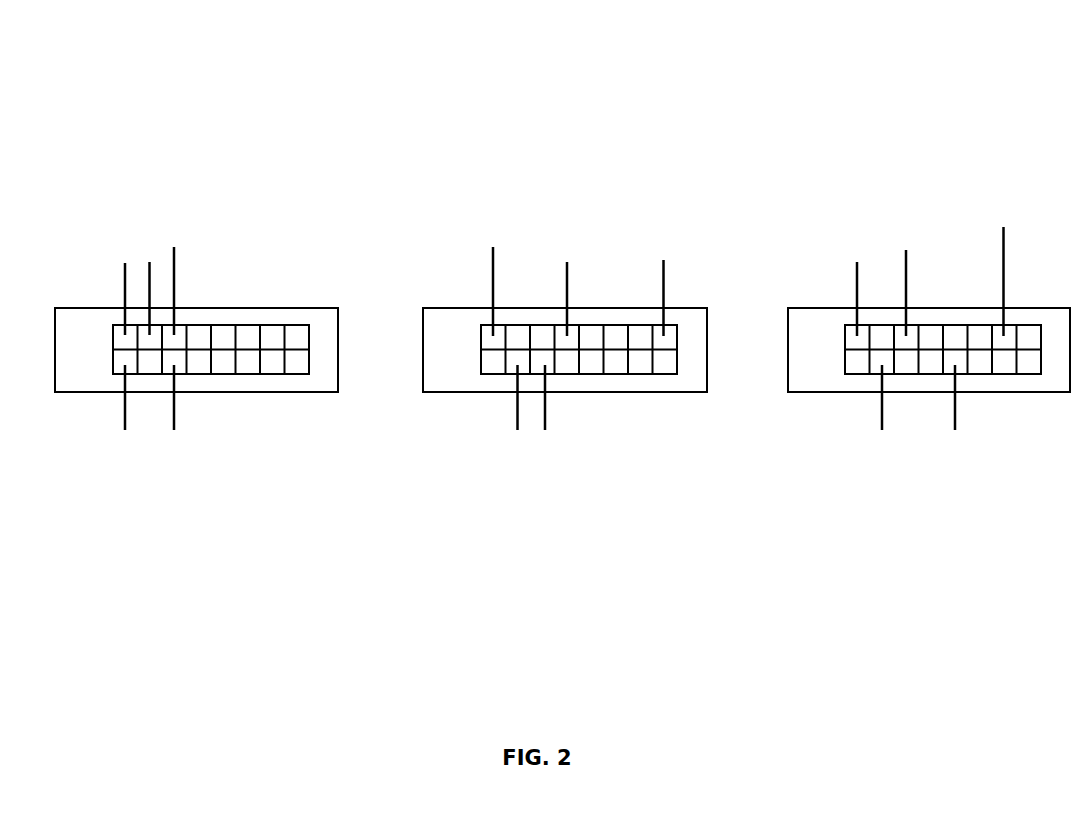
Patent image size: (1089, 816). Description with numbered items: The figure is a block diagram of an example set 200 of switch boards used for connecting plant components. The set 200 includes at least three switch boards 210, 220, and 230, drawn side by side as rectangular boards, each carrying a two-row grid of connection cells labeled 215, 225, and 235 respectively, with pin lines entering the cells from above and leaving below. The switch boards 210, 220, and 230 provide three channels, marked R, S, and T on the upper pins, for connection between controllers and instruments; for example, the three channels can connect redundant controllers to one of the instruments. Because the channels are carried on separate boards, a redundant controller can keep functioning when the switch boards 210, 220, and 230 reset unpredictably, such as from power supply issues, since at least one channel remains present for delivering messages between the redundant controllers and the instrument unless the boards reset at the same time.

The set of switch boards 200 is at (1064, 63).
The switch board 210 is at (316, 308).
The first phase coil grid 215 is at (300, 374).
The switch board 220 is at (695, 308).
The second phase coil grid 225 is at (668, 374).
The switch board 230 is at (1058, 308).
The third phase coil grid 235 is at (1033, 374).